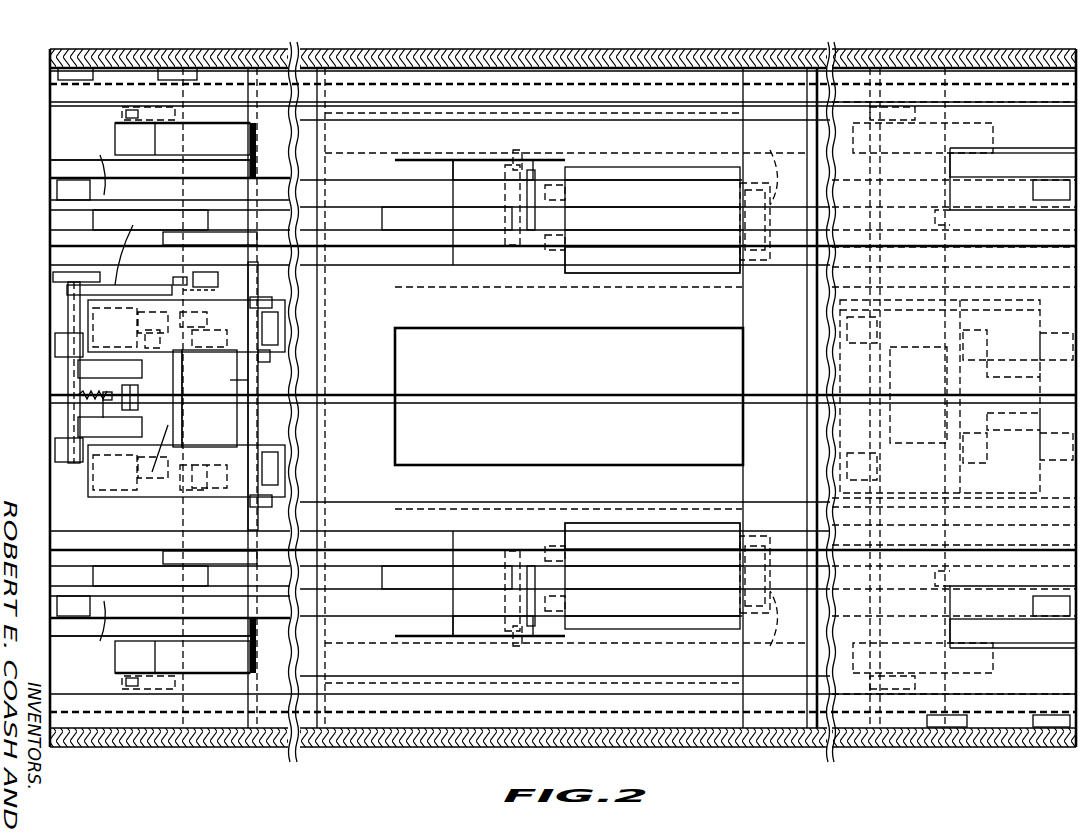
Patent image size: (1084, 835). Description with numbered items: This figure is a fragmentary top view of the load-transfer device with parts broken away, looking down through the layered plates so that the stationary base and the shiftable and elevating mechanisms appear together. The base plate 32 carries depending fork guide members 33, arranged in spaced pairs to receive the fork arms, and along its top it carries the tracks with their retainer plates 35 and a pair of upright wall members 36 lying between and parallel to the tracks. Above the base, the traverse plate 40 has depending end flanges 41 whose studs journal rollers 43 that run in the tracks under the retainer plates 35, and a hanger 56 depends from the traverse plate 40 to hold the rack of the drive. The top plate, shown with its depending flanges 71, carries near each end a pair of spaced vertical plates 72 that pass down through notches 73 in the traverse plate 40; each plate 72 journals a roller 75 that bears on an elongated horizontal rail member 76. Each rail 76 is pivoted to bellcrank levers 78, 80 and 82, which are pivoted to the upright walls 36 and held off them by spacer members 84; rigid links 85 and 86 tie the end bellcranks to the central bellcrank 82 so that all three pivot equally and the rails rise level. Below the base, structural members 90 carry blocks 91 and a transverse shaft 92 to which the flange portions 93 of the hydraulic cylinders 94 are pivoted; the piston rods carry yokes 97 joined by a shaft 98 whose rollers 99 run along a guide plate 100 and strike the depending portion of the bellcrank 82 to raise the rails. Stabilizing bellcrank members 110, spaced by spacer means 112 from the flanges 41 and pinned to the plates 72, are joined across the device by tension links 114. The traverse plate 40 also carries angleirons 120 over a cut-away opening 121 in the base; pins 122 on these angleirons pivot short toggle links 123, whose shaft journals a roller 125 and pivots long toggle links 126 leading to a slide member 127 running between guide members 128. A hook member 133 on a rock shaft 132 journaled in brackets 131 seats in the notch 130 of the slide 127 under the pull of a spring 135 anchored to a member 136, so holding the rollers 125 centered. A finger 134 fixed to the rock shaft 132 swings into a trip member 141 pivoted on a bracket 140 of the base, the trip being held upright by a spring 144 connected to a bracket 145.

The base plate 32 is at (58, 395).
The fork guide member 33 is at (238, 750).
The retainer plate 35 is at (58, 77).
The upright wall member 36 is at (58, 248).
The traverse plate 40 is at (993, 78).
The depending end flange 41 is at (57, 95).
The roller 43 is at (92, 48).
The hanger 56 is at (560, 510).
The depending flange 71 is at (720, 52).
The vertical plate 72 is at (60, 167).
The notch 73 is at (1038, 153).
The roller 75 is at (58, 192).
The rail member 76 is at (102, 193).
The bellcrank lever 78 is at (133, 217).
The bellcrank lever 80 is at (935, 218).
The bellcrank lever 82 is at (412, 220).
The spacer member 84 is at (488, 285).
The rigid link 85 is at (330, 290).
The rigid link 86 is at (680, 237).
The structural member 90 is at (583, 320).
The block 91 is at (792, 213).
The transverse shaft 92 is at (758, 262).
The flange portion 93 is at (770, 180).
The cylinder 94 is at (707, 267).
The yoke 97 is at (513, 198).
The shaft 98 is at (530, 157).
The roller 99 is at (505, 160).
The guide plate 100 is at (465, 168).
The bellcrank member 110 is at (233, 143).
The spacer means 112 is at (122, 115).
The tension link 114 is at (360, 128).
The angleiron 120 is at (286, 343).
The cut-away opening 121 is at (286, 362).
The pin 122 is at (265, 298).
The short toggle link 123 is at (286, 322).
The roller 125 is at (248, 380).
The long toggle link 126 is at (199, 446).
The slide member 127 is at (168, 435).
The guide member 128 is at (88, 322).
The notch 130 is at (137, 388).
The bracket 131 is at (55, 347).
The rock shaft 132 is at (70, 387).
The hook member 133 is at (103, 367).
The finger 134 is at (133, 222).
The spring 135 is at (78, 397).
The anchor member 136 is at (103, 410).
The bracket 140 is at (207, 273).
The trip member 141 is at (208, 292).
The spring 144 is at (168, 288).
The bracket 145 is at (180, 278).